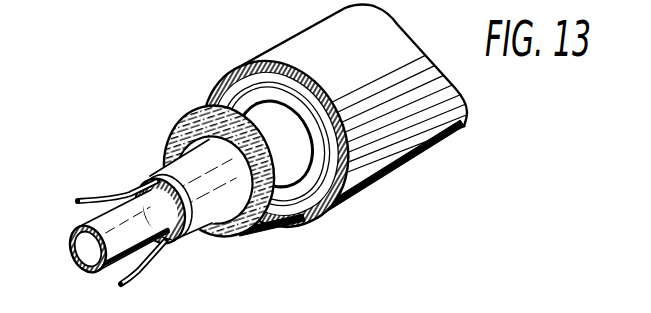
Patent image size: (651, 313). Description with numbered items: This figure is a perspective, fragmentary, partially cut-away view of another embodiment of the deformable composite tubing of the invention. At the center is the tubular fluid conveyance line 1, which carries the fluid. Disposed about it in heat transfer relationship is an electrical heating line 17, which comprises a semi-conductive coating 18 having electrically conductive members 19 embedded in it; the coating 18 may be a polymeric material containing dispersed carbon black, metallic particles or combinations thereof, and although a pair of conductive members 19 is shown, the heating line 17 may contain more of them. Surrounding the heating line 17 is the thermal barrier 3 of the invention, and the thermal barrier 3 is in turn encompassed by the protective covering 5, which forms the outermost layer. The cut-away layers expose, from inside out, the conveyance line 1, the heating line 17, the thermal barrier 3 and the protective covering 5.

The tubular fluid conveyance line 1 is at (88, 257).
The thermal barrier 3 is at (211, 108).
The protective covering 5 is at (387, 63).
The electrical heating line 17 is at (168, 172).
The semi-conductive coating 18 is at (152, 179).
The electrically conductive members 19 is at (109, 193).